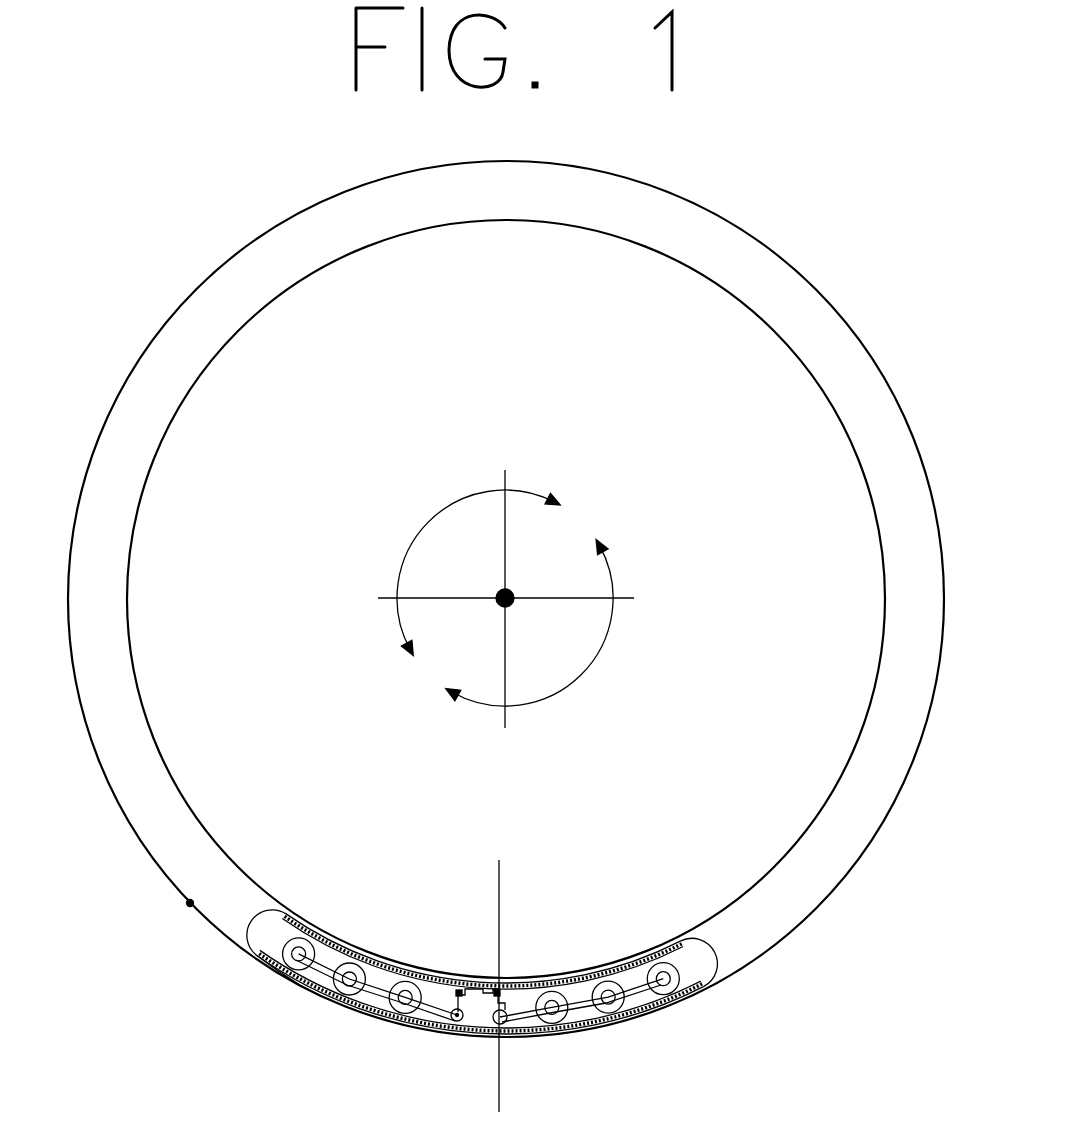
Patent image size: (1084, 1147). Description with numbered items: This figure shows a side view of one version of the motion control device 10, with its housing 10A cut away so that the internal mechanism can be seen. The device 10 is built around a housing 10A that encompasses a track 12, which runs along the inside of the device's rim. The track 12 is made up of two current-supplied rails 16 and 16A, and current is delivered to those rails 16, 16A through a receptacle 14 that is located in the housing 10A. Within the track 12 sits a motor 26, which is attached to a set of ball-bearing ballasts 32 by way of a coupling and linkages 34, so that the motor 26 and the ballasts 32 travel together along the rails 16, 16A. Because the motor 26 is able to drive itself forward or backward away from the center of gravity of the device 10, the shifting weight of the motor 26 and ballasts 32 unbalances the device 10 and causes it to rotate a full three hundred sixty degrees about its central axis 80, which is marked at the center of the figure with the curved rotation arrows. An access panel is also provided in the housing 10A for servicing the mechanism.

The motion control device 10 is at (164, 316).
The housing 10A is at (403, 172).
The track 12 is at (597, 1032).
The receptacle 14 is at (190, 905).
The rail 16 is at (264, 966).
The rail 16A is at (283, 978).
The motor 26 is at (478, 1020).
The ball-bearing ballasts 32 is at (541, 1024).
The linkages 34 is at (386, 998).
The axis 80 is at (512, 591).